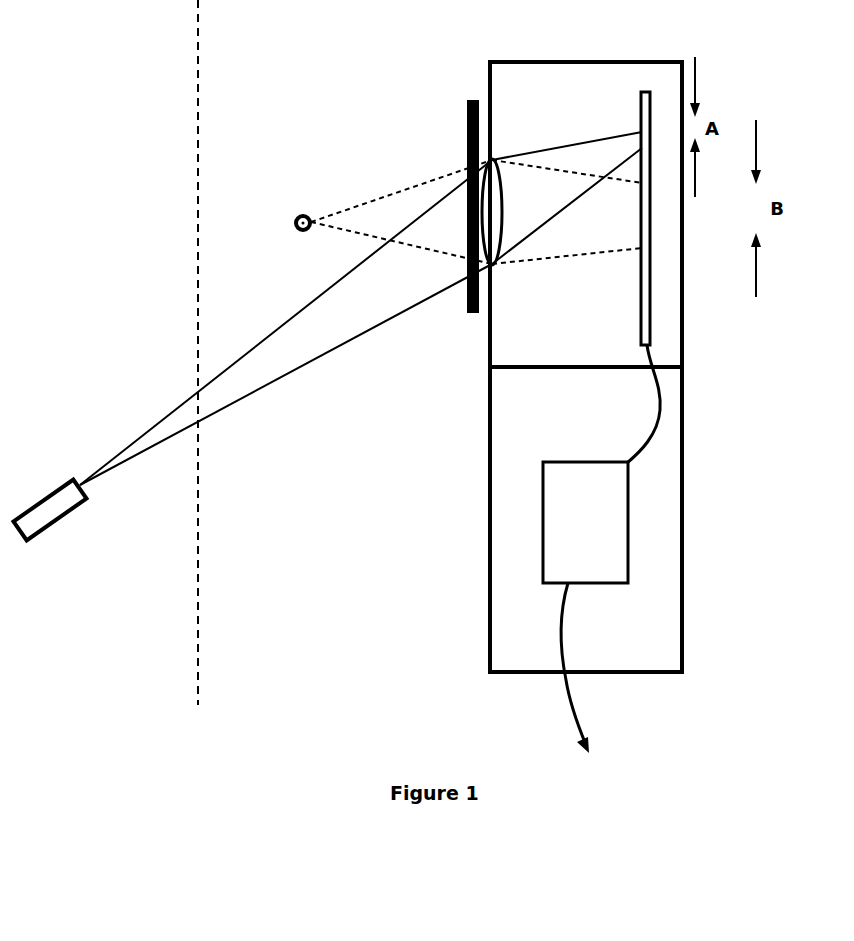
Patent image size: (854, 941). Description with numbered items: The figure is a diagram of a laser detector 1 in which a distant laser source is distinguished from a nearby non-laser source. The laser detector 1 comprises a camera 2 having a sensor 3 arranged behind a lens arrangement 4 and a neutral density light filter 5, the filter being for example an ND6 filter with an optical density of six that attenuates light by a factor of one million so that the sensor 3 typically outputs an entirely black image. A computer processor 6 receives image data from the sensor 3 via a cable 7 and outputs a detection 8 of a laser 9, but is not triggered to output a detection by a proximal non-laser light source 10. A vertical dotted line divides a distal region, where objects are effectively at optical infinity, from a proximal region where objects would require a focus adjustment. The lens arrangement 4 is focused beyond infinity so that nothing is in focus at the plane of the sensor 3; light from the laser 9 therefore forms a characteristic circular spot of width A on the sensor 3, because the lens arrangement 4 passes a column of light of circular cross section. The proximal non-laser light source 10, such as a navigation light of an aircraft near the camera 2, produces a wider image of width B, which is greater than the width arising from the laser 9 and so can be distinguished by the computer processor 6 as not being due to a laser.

The laser detector 1 is at (606, 367).
The camera 2 is at (586, 189).
The sensor 3 is at (622, 218).
The lens arrangement 4 is at (499, 190).
The neutral density light filter 5 is at (455, 206).
The computer processor 6 is at (585, 522).
The cable 7 is at (643, 404).
The detection 8 is at (583, 668).
The laser 9 is at (50, 516).
The proximal non-laser light source 10 is at (294, 202).